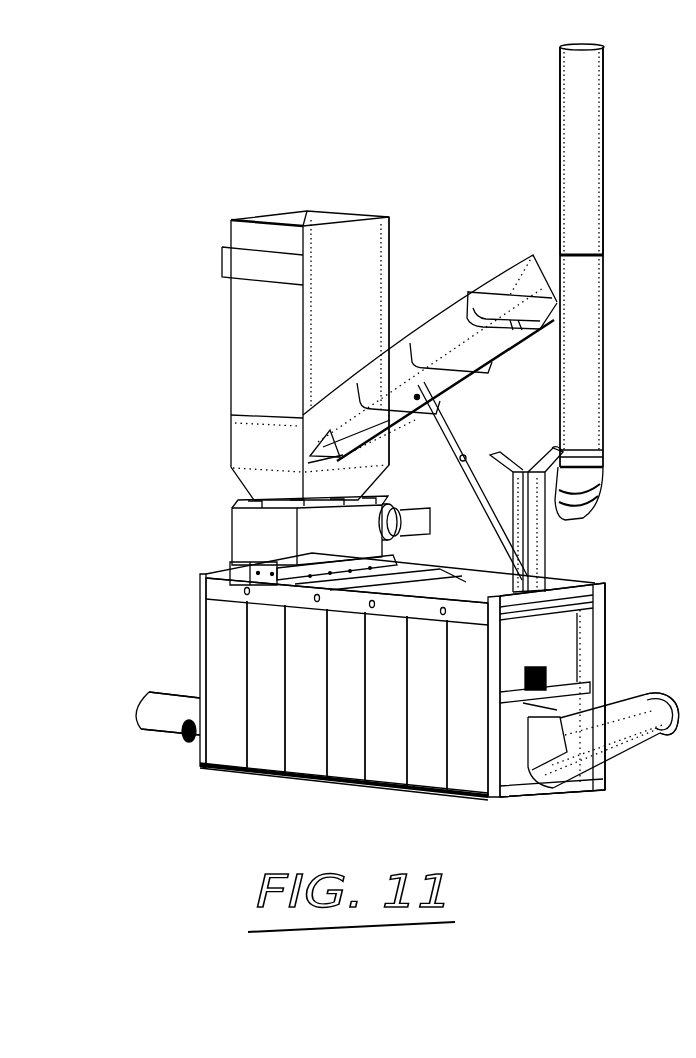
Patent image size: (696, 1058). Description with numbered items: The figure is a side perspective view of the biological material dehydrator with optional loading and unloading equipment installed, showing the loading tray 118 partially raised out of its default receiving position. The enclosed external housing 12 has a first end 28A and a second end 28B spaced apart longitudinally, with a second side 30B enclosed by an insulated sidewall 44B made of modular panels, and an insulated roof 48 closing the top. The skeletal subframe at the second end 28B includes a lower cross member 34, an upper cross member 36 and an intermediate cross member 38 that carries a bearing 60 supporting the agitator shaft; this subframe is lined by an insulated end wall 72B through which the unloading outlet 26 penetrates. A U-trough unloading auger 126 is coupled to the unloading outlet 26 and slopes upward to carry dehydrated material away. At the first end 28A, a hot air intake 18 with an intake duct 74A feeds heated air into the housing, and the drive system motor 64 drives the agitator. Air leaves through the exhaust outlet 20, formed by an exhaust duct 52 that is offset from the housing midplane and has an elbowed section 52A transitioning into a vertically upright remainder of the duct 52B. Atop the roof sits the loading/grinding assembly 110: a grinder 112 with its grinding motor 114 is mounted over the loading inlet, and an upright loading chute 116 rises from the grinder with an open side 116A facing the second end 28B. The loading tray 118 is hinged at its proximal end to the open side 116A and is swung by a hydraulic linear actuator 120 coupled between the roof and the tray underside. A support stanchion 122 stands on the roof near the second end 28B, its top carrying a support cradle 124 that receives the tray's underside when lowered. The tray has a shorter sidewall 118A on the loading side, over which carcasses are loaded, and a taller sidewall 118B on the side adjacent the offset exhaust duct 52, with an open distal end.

The loading/grinding assembly 110 is at (170, 282).
The upright loading chute 116 is at (266, 328).
The open side 116A is at (356, 276).
The loading tray 118 is at (507, 296).
The shorter sidewall 118A is at (372, 372).
The taller sidewall 118B is at (487, 300).
The hydraulic linear actuator 120 is at (484, 507).
The roof 48 is at (414, 562).
The grinder 112 is at (265, 537).
The grinding motor 114 is at (416, 522).
The external housing 12 is at (200, 650).
The first end 28A is at (178, 628).
The sidewall 44B is at (308, 752).
The second side 30B is at (392, 800).
The lower cross member 34 is at (512, 799).
The unloading outlet 26 is at (515, 738).
The second end 28B is at (628, 600).
The upper cross member 36 is at (563, 600).
The intermediate cross member 38 is at (574, 690).
The bearing 60 is at (536, 668).
The insulated end wall 72B is at (527, 790).
The unloading auger 126 is at (656, 680).
The hot air intake 18 is at (128, 686).
The intake duct 74A is at (150, 726).
The motor 64 is at (187, 746).
The exhaust outlet 20 is at (627, 331).
The exhaust duct 52 is at (578, 438).
The vertically upright remainder of the duct 52B is at (596, 232).
The elbowed section 52A is at (602, 488).
The support stanchion 122 is at (542, 550).
The support cradle 124 is at (540, 458).